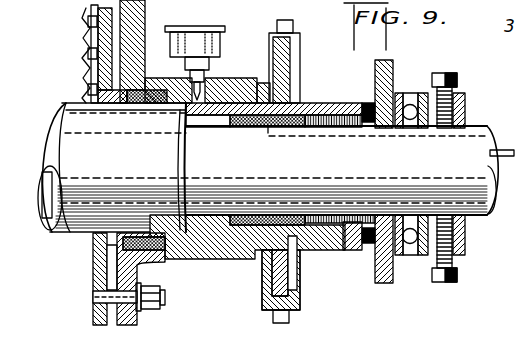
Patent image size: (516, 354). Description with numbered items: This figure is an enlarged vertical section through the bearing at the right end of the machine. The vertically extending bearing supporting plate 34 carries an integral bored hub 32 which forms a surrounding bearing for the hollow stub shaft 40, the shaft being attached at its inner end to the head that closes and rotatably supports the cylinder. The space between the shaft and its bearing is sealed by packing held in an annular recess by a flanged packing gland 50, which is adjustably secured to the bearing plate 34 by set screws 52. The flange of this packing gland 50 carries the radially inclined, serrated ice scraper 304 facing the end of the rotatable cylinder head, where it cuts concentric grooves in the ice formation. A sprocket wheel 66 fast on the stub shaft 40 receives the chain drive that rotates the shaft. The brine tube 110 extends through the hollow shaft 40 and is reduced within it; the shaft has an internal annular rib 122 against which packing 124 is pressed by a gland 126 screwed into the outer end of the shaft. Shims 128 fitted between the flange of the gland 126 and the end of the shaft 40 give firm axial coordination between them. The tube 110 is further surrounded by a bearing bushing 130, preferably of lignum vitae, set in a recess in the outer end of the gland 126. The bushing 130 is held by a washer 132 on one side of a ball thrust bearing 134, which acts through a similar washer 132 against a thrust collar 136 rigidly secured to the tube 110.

The leading ice scraper 304 is at (90, 40).
The bearing supporting plate 34 is at (193, 22).
The bored hub 32 is at (238, 98).
The hollow stub shaft 40 is at (325, 113).
The tube 110 is at (276, 167).
The internal annular rib 122 is at (200, 252).
The packing 124 is at (229, 222).
The gland 126 is at (376, 268).
The shims 128 is at (366, 100).
The bearing bushing 130 is at (350, 237).
The washer 132 is at (425, 100).
The ball thrust bearing 134 is at (409, 250).
The thrust collar 136 is at (458, 256).
The flanged packing gland 50 is at (93, 270).
The set screws 52 is at (162, 303).
The sprocket wheel 66 is at (290, 305).